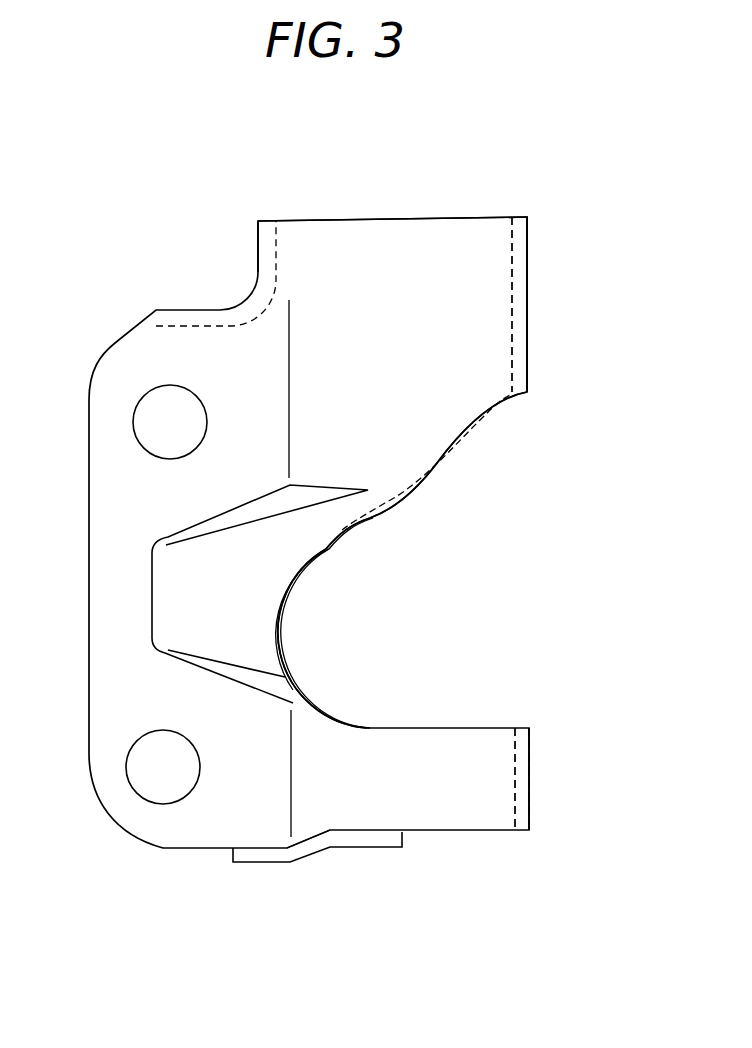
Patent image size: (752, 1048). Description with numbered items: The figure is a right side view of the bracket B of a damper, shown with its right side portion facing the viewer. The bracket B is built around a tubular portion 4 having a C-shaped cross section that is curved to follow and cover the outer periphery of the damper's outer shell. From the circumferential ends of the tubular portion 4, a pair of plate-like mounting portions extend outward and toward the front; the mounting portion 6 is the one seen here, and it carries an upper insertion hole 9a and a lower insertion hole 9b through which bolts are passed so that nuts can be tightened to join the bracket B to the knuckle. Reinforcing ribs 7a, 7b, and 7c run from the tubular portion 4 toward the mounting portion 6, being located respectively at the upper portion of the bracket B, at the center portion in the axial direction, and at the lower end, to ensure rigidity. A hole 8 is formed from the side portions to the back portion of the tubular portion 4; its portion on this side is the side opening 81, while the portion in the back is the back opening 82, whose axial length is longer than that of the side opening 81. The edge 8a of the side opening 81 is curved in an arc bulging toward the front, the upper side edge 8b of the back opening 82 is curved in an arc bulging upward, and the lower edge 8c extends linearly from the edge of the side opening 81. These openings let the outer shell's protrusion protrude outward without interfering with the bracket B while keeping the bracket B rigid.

The tubular portion 4 is at (410, 233).
The mounting portion 6 is at (103, 507).
The reinforcing rib 7a is at (204, 327).
The reinforcing rib 7b is at (162, 583).
The reinforcing rib 7c is at (298, 852).
The hole 8 is at (445, 509).
The edge of the side opening 8a is at (280, 632).
The upper side edge of the back opening 8b is at (518, 393).
The lower edge of the back opening 8c is at (522, 720).
The side opening 81 is at (385, 678).
The back opening 82 is at (492, 588).
The insertion hole 9a is at (135, 415).
The insertion hole 9b is at (132, 768).
The bracket B is at (521, 203).